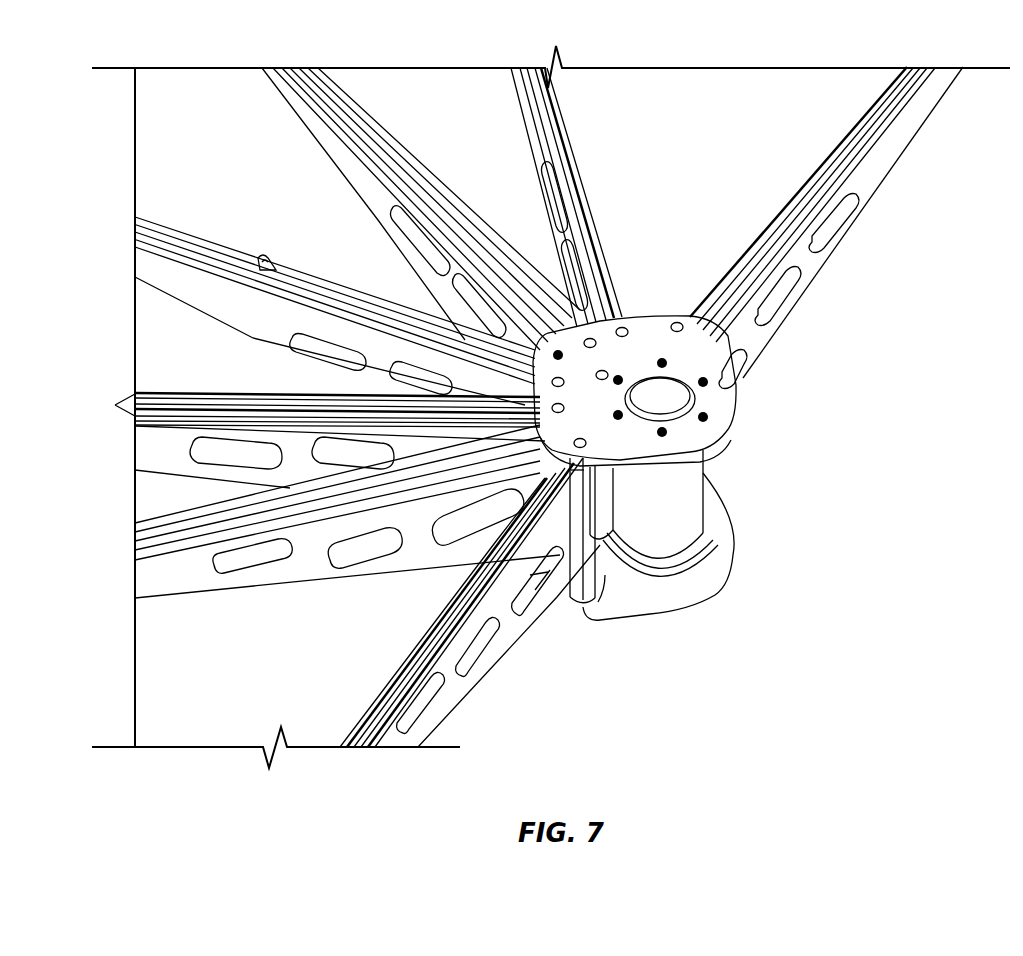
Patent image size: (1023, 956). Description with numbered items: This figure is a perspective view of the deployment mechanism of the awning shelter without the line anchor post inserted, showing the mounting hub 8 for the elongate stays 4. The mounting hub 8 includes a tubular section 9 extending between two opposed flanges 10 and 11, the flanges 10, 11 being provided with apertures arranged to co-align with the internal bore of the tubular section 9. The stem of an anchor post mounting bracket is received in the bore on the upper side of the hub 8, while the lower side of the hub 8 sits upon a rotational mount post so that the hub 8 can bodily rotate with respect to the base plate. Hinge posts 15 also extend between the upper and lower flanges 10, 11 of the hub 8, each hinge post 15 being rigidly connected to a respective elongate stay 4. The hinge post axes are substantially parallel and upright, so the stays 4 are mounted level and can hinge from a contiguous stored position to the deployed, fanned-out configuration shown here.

The elongate stay 4 is at (452, 207).
The mounting hub 8 is at (659, 417).
The tubular section 9 is at (705, 470).
The upper flange 10 is at (653, 330).
The lower flange 11 is at (722, 580).
The hinge post 15 is at (582, 595).